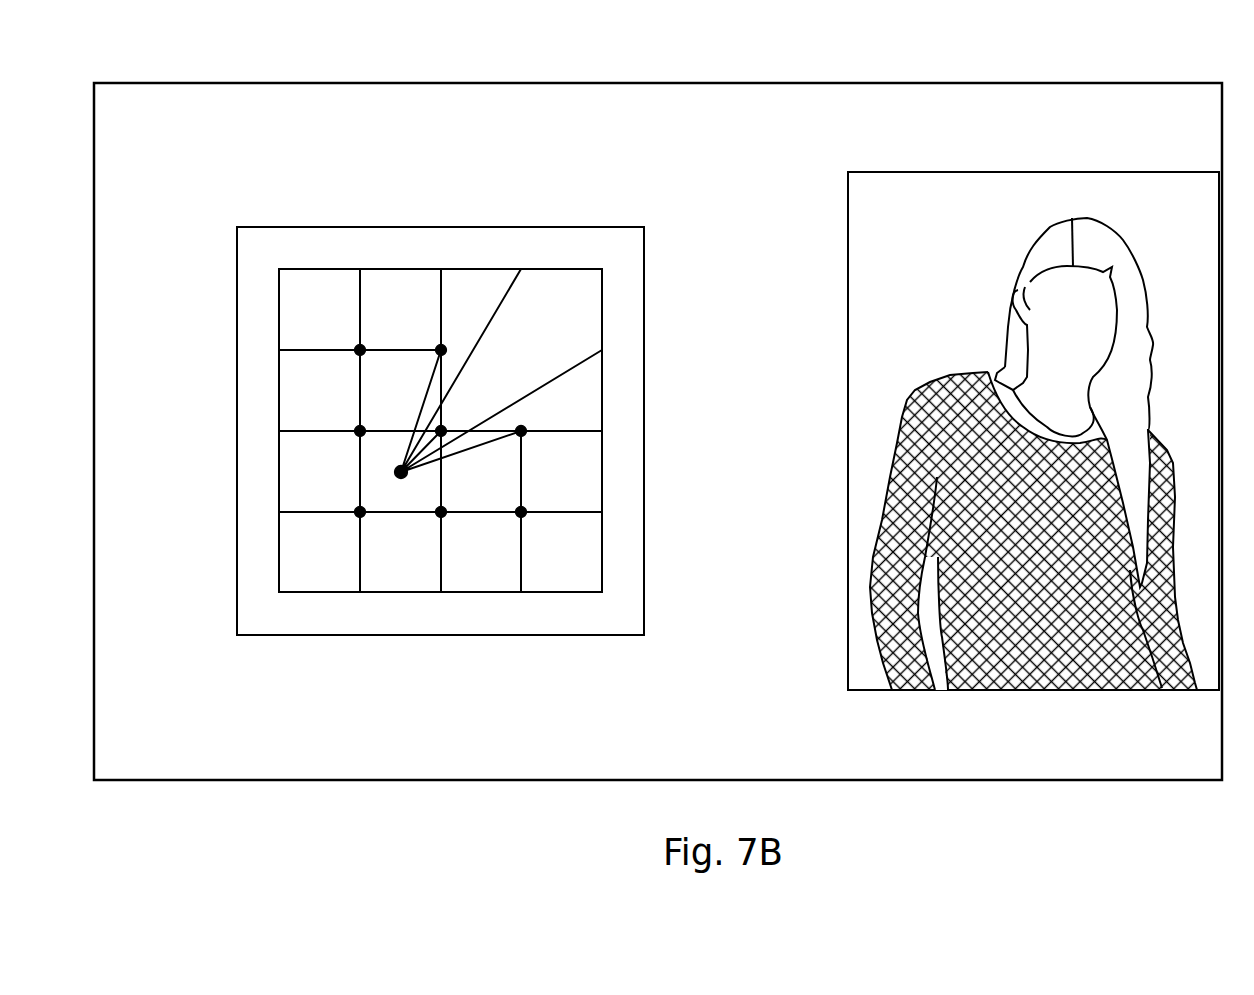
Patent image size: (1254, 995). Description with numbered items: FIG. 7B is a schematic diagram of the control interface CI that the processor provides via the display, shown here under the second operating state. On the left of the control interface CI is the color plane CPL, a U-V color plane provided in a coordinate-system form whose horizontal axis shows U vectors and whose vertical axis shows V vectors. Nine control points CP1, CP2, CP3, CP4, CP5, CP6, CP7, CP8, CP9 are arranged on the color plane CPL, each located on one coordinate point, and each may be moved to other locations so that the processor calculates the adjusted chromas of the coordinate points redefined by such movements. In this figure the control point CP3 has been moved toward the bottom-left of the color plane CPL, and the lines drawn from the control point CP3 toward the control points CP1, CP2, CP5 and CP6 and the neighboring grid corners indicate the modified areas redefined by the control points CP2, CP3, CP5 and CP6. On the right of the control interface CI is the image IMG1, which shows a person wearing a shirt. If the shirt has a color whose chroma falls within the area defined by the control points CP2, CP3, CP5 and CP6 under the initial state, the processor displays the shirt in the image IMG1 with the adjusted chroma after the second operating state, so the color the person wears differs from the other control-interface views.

The control interface CI is at (248, 83).
The control point CP1 is at (366, 345).
The control point CP2 is at (447, 345).
The control point CP3 is at (392, 475).
The control point CP4 is at (352, 424).
The control point CP5 is at (453, 420).
The control point CP6 is at (532, 424).
The control point CP7 is at (353, 522).
The control point CP8 is at (435, 522).
The control point CP9 is at (513, 522).
The color plane CPL is at (624, 317).
The image IMG1 is at (1133, 172).